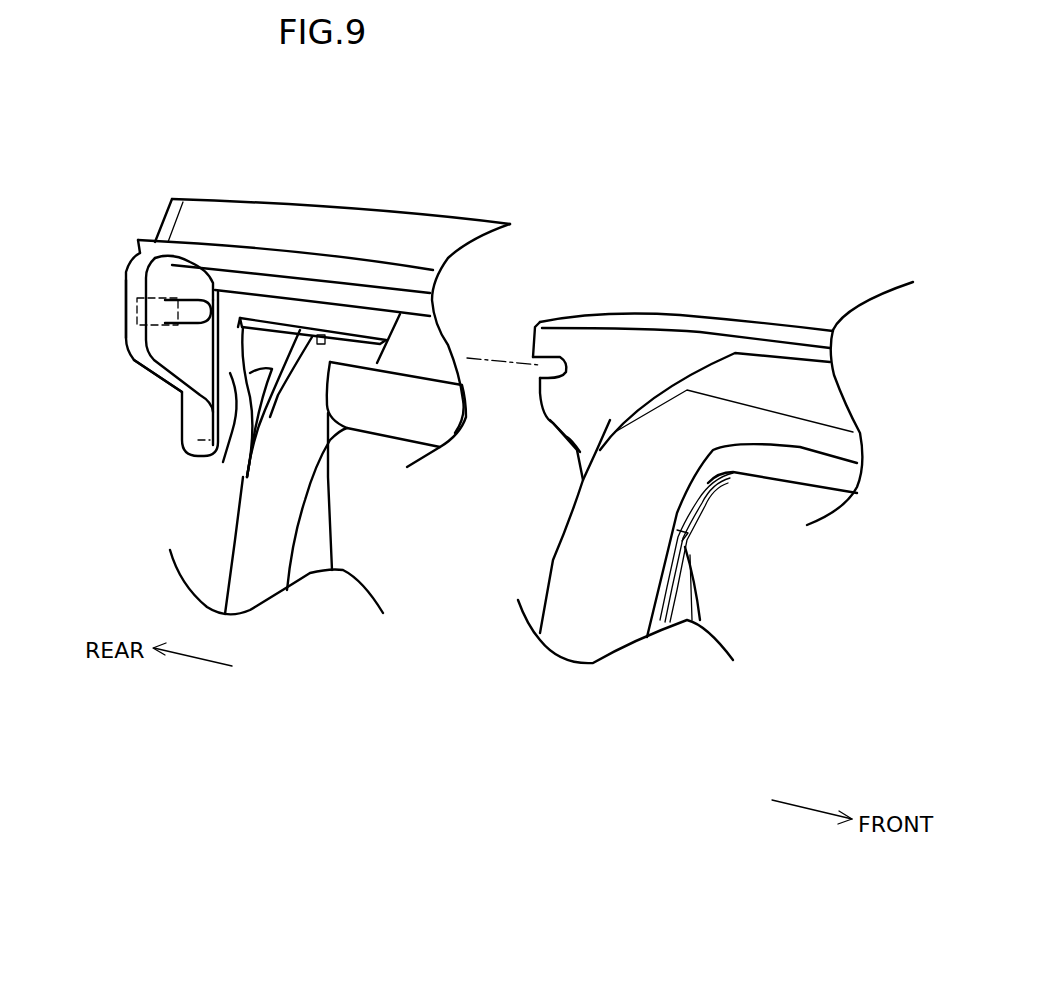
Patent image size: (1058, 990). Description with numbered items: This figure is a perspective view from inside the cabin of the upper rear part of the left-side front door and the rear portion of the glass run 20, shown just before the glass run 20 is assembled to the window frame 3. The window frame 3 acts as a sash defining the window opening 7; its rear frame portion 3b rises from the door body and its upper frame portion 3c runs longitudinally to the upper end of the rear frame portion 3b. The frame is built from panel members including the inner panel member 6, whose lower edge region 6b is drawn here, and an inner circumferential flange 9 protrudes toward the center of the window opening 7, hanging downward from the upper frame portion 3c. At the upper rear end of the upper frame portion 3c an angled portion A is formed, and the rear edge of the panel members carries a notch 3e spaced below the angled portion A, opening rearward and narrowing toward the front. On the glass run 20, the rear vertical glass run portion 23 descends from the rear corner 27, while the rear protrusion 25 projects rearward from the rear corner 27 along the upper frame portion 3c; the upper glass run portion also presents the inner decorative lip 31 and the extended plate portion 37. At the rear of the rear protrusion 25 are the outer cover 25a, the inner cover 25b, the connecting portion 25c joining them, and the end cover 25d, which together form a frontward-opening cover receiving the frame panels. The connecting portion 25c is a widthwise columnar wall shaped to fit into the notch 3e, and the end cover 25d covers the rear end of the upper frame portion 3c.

The glass run 20 is at (430, 219).
The rear protrusion 25 is at (245, 221).
The outer cover 25a is at (237, 430).
The inner cover 25b is at (137, 335).
The connecting portion 25c is at (188, 311).
The end cover 25d is at (163, 377).
The rear corner 27 is at (312, 390).
The extended plate portion 37 is at (438, 367).
The inner decorative lip 31 is at (413, 422).
The rear vertical glass run portion 23 is at (280, 560).
The window frame 3 is at (790, 320).
The rear frame portion 3b is at (590, 637).
The upper frame portion 3c is at (820, 388).
The notch 3e is at (538, 358).
The inner panel member 6 is at (623, 347).
The flange portion 6b is at (743, 462).
The window opening 7 is at (812, 494).
The inner circumferential flange 9 is at (777, 467).
The angled portion A is at (536, 324).